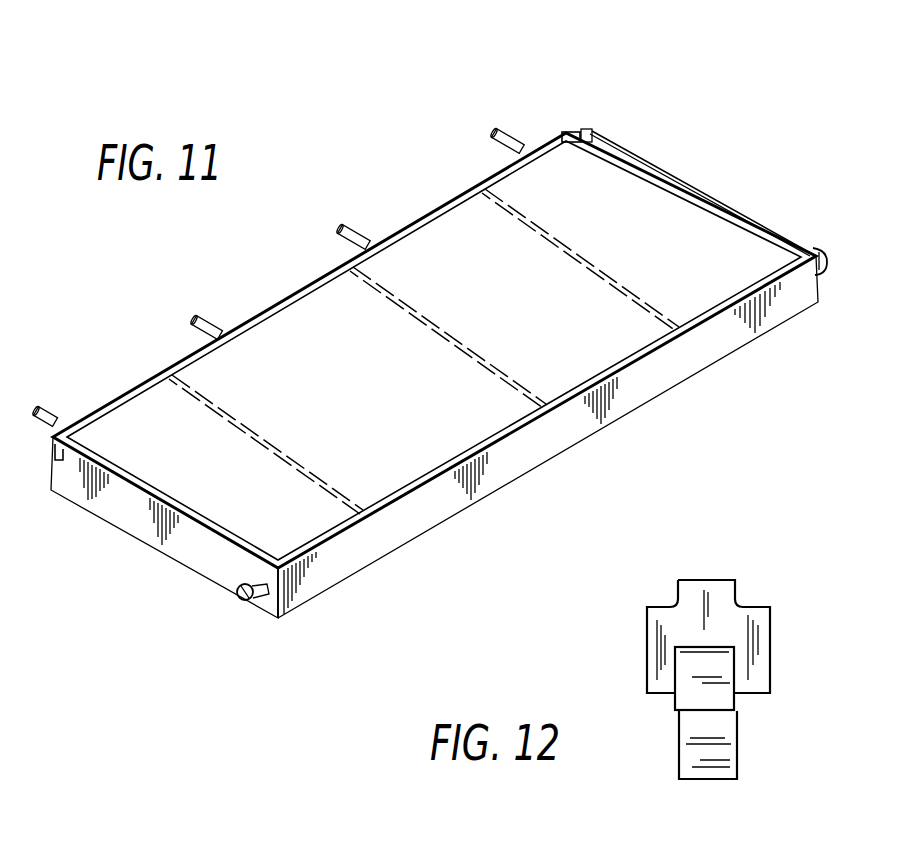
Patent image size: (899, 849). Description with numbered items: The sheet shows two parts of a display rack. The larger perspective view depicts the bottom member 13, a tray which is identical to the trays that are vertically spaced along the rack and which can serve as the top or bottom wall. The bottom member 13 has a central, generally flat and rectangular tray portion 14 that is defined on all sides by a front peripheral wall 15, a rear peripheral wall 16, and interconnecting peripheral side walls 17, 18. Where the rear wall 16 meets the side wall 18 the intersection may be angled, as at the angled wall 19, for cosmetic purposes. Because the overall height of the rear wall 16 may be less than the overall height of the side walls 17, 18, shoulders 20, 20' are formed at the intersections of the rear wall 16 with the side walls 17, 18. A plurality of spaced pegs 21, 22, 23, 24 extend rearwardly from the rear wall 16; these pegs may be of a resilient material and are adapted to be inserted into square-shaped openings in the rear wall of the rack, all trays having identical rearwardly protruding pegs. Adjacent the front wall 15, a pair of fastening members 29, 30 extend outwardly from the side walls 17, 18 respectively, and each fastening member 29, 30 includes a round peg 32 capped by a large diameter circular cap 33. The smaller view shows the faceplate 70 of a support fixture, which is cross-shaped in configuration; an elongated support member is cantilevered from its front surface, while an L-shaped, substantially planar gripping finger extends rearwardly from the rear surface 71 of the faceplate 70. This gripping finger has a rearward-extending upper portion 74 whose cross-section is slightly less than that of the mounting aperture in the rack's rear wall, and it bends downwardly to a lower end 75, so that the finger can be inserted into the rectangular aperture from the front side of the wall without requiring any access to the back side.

In FIG. 11, the bottom member 13 is at (298, 248).
In FIG. 11, the tray portion 14 is at (366, 390).
In FIG. 11, the front peripheral wall 15 is at (415, 524).
In FIG. 11, the rear peripheral wall 16 is at (143, 383).
In FIG. 11, the peripheral side wall 17 is at (190, 541).
In FIG. 11, the peripheral side wall 18 is at (650, 166).
In FIG. 11, the angled wall 19 is at (572, 133).
In FIG. 11, the shoulder 20 is at (37, 503).
In FIG. 11, the shoulder 20' is at (599, 87).
In FIG. 11, the peg 21 is at (43, 408).
In FIG. 11, the peg 22 is at (196, 322).
In FIG. 11, the peg 23 is at (344, 233).
In FIG. 11, the peg 24 is at (497, 134).
In FIG. 11, the fastening member 29 is at (230, 618).
In FIG. 11, the fastening member 30 is at (810, 250).
In FIG. 11, the round peg 32 is at (280, 592).
In FIG. 11, the circular cap 33 is at (820, 260).
In FIG. 12, the faceplate 70 is at (660, 598).
In FIG. 12, the rear surface 71 is at (762, 653).
In FIG. 12, the upper portion 74 is at (692, 648).
In FIG. 12, the lower end 75 is at (686, 691).